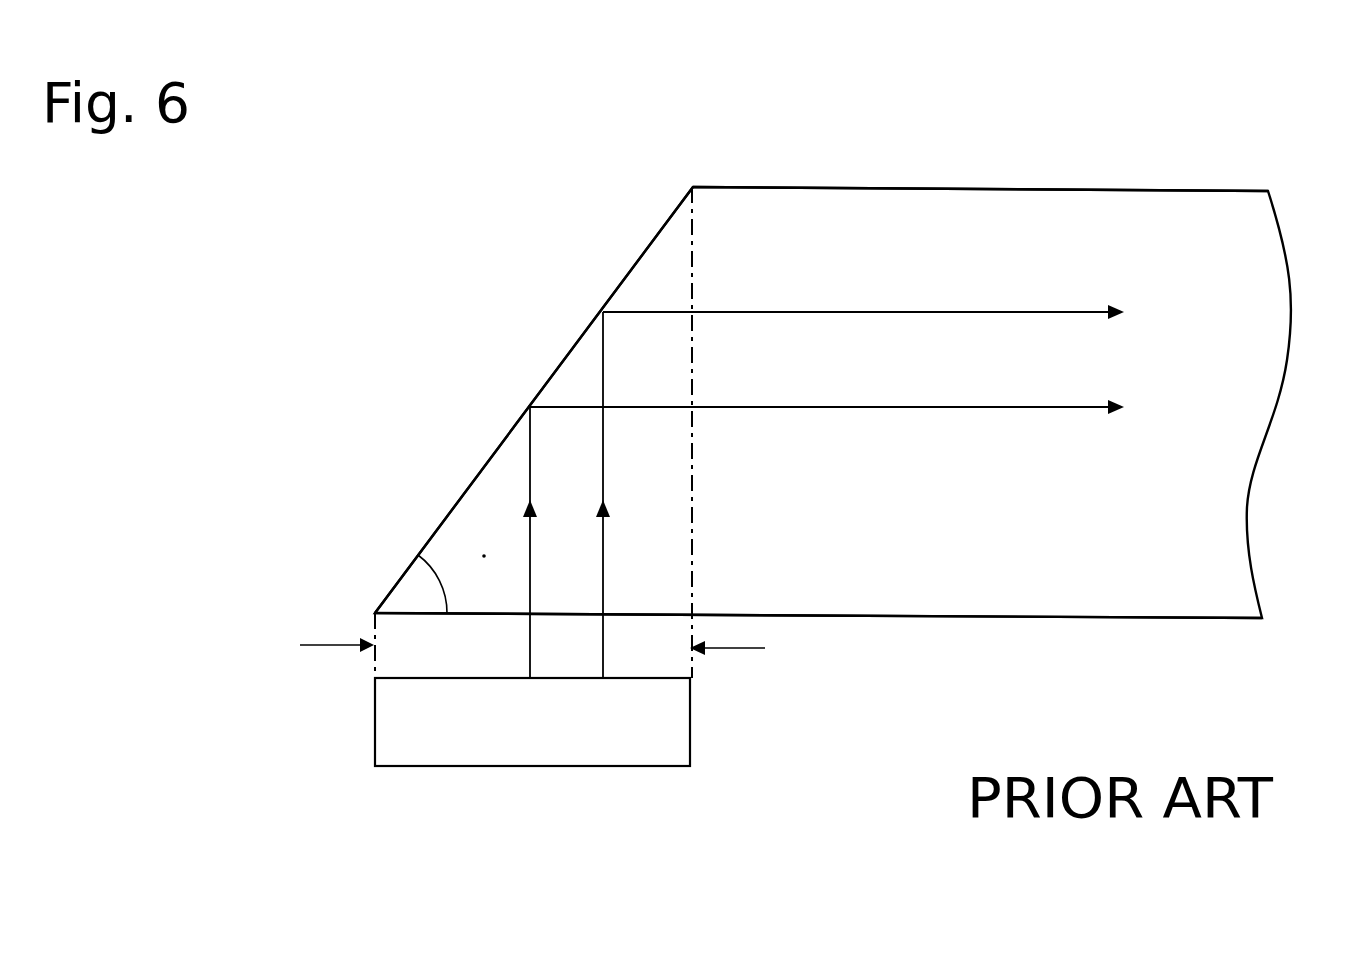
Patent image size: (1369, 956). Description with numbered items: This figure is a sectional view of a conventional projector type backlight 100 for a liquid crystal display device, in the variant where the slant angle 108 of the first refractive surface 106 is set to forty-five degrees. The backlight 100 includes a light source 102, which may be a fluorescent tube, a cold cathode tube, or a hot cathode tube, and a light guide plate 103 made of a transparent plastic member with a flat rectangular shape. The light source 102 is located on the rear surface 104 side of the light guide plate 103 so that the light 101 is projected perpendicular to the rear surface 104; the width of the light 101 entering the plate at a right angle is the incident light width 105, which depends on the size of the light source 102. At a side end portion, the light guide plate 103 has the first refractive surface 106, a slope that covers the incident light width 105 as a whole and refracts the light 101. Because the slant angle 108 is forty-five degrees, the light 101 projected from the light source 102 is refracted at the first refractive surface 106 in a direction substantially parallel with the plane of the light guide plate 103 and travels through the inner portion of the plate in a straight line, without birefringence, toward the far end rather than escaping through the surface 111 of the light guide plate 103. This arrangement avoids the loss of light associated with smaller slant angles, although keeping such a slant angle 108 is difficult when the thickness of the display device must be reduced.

The backlight 100 is at (523, 343).
The light 101 is at (528, 649).
The light source 102 is at (631, 761).
The light guide plate 103 is at (1283, 250).
The rear surface 104 is at (1089, 619).
The incident light width 105 is at (336, 646).
The first refractive surface 106 is at (653, 241).
The slant angle 108 is at (405, 588).
The surface 111 is at (1090, 190).